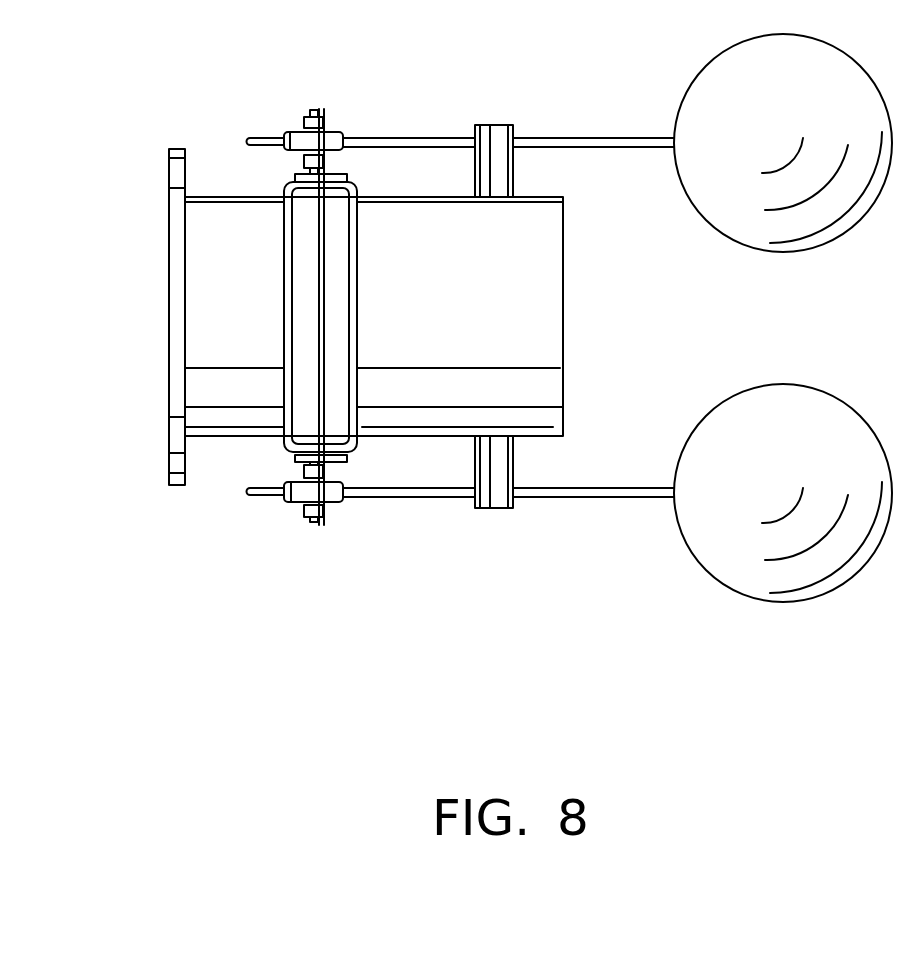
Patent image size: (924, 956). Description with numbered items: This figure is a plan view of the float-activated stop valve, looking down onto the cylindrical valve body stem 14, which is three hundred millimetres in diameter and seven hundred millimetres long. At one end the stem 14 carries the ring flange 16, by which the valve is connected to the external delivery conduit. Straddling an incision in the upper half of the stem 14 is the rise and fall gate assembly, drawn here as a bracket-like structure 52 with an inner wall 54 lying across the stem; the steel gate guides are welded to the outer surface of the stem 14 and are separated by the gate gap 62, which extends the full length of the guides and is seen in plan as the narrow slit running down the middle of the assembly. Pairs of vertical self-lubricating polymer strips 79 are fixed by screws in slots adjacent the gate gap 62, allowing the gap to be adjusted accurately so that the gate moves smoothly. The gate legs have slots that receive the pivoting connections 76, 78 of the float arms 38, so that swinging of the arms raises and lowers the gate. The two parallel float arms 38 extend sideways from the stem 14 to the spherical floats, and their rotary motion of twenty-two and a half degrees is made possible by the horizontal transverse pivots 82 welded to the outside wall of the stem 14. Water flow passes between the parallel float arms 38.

The valve body stem 14 is at (542, 312).
The ring flange 16 is at (173, 302).
The float arms 38 is at (585, 142).
The U-shaped bracket 52 is at (353, 278).
The inner bracket wall 54 is at (290, 305).
The gate gap 62 is at (325, 186).
The pivoting connection 76 is at (297, 135).
The pivoting connection 78 is at (297, 502).
The self-lubricating polymer strips 79 is at (293, 172).
The horizontal transverse pivots 82 is at (498, 135).